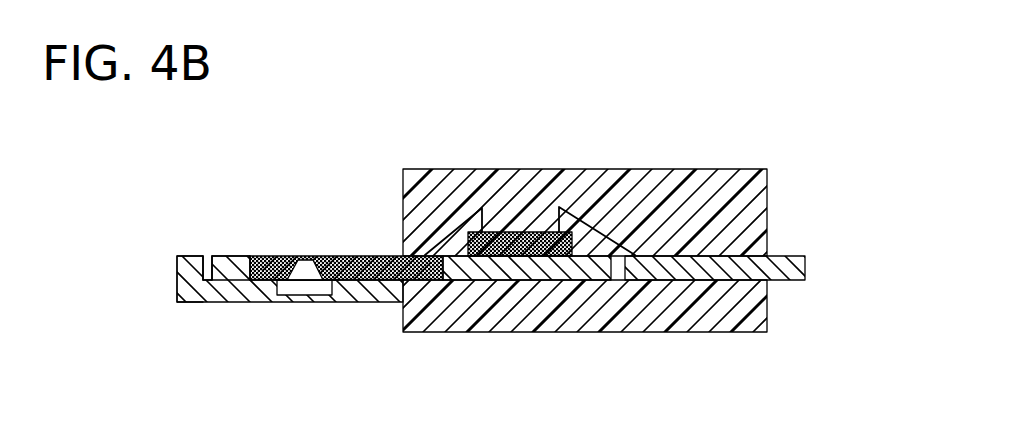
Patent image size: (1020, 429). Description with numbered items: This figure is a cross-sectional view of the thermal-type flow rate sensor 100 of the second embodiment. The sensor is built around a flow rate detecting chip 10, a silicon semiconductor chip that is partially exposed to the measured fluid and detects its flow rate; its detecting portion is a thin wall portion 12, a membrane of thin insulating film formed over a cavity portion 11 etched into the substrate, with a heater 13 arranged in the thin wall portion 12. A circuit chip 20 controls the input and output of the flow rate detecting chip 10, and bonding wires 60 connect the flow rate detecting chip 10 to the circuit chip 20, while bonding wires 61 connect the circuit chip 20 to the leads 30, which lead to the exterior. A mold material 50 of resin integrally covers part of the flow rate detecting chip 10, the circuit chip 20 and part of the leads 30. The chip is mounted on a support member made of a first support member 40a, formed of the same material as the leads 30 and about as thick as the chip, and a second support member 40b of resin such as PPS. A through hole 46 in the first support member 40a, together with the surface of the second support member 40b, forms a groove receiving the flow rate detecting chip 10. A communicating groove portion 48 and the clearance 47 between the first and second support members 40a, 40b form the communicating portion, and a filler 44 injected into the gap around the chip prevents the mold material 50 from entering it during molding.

The thermal-type flow rate sensor 100 is at (778, 167).
The mold material 50 is at (653, 185).
The circuit chip 20 is at (537, 232).
The bonding wires 60 is at (443, 237).
The bonding wires 61 is at (595, 228).
The leads 30 is at (805, 262).
The first support member 40a is at (525, 265).
The second support member 40b is at (176, 265).
The filler 44 is at (240, 300).
The through hole 46 is at (236, 256).
The clearance 47 is at (208, 255).
The communicating groove portion 48 is at (300, 283).
The flow rate detecting chip 10 is at (360, 257).
The cavity portion 11 is at (338, 282).
The thin wall portion 12 is at (293, 234).
The heater 13 is at (303, 260).